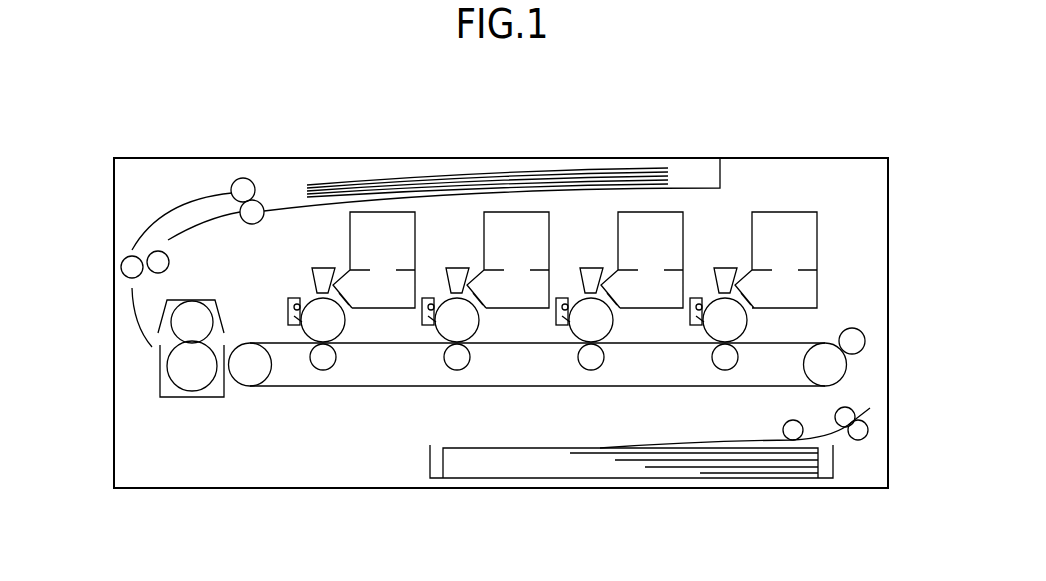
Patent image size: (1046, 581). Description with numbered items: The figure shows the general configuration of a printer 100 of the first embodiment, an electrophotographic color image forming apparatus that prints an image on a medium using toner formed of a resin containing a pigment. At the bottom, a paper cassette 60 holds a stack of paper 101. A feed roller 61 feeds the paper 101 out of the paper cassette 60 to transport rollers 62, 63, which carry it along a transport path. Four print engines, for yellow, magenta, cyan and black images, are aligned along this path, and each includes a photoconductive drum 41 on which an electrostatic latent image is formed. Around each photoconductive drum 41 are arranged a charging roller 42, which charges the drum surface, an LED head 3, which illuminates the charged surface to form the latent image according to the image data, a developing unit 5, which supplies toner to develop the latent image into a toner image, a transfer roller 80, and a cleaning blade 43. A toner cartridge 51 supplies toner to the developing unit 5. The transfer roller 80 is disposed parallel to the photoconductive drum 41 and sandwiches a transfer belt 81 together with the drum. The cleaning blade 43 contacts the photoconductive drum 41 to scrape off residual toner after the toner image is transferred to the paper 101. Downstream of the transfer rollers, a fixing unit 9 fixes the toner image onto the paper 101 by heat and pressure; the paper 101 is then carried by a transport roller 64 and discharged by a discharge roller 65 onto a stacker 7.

The printer 100 is at (850, 157).
The stacker 7 is at (454, 180).
The discharge roller 65 is at (243, 178).
The transport roller 64 is at (121, 268).
The fixing unit 9 is at (168, 398).
The transfer belt 81 is at (292, 388).
The transfer roller 80 is at (538, 395).
The transport roller 63 is at (866, 340).
The photoconductive drum 41 is at (747, 325).
The charging roller 42 is at (694, 300).
The cleaning blade 43 is at (711, 328).
The LED head 3 is at (725, 266).
The developing unit 5 is at (802, 250).
The toner cartridge 51 is at (817, 212).
The feed roller 61 is at (791, 420).
The transport roller 62 is at (869, 430).
The paper cassette 60 is at (430, 466).
The paper 101 is at (493, 467).